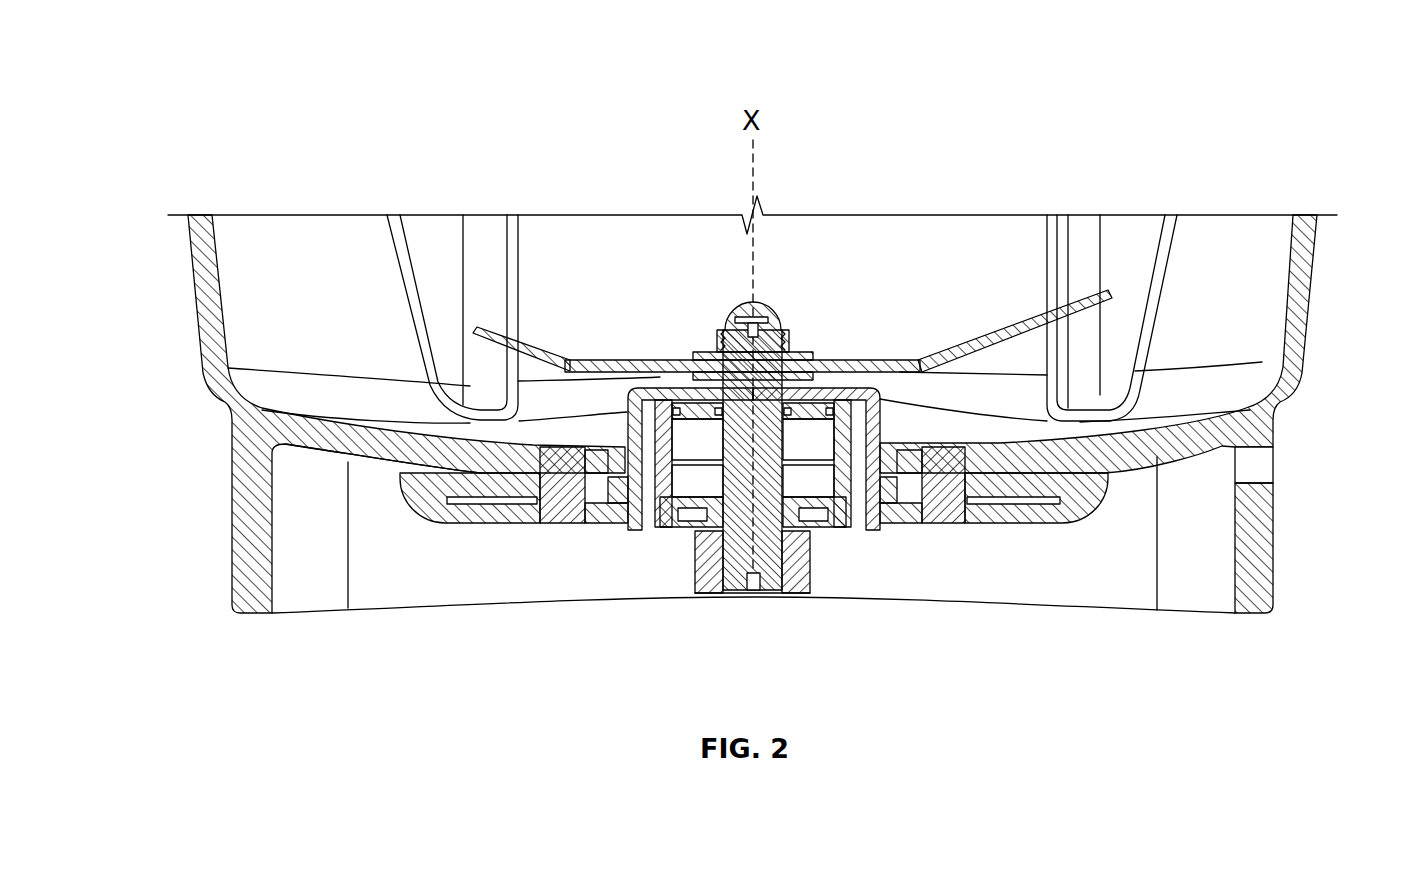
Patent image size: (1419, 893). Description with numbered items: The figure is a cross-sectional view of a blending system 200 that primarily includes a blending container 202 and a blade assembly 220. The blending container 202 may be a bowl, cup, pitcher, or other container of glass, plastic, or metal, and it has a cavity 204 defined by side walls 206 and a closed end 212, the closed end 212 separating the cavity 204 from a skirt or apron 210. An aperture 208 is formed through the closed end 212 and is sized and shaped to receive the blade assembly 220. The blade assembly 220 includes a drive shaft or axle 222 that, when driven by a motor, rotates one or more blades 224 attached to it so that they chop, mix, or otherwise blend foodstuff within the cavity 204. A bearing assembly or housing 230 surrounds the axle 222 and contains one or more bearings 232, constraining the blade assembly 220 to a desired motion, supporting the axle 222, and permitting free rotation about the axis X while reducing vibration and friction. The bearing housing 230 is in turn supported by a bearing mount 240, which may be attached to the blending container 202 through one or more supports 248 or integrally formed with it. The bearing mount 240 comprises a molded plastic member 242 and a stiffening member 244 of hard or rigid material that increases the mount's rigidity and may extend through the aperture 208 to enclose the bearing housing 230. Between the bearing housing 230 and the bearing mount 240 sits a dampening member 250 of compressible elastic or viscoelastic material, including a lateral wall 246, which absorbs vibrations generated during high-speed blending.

The blending system 200 is at (233, 90).
The blending container 202 is at (1290, 276).
The cavity 204 is at (1127, 230).
The side walls 206 is at (270, 287).
The aperture 208 is at (592, 505).
The skirt or apron 210 is at (285, 548).
The closed end 212 is at (1250, 446).
The blade assembly 220 is at (721, 294).
The drive shaft or axle 222 is at (788, 345).
The blades 224 is at (530, 345).
The bearing assembly or housing 230 is at (660, 495).
The bearings 232 is at (693, 445).
The bearing mount 240 is at (404, 480).
The molded plastic member 242 is at (1233, 502).
The stiffening member 244 is at (1007, 505).
The lateral wall 246 is at (870, 404).
The supports 248 is at (548, 515).
The dampening member 250 is at (857, 517).